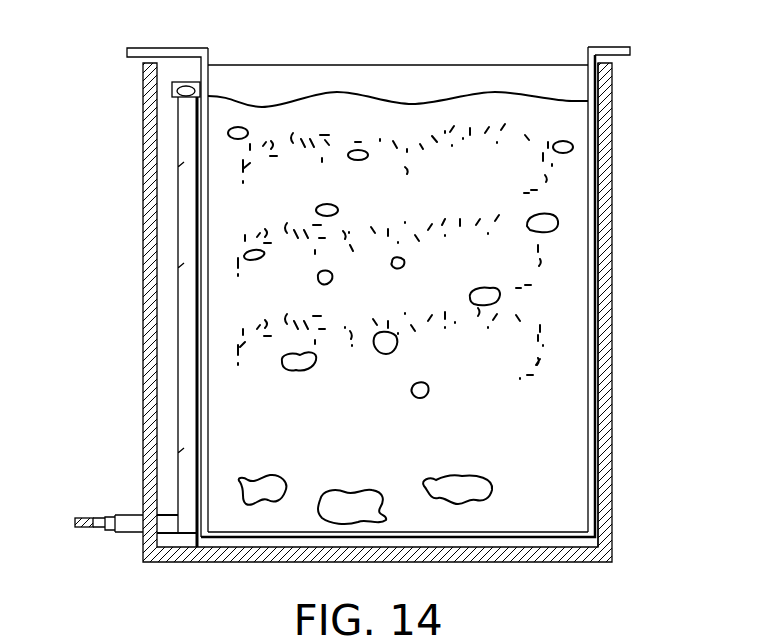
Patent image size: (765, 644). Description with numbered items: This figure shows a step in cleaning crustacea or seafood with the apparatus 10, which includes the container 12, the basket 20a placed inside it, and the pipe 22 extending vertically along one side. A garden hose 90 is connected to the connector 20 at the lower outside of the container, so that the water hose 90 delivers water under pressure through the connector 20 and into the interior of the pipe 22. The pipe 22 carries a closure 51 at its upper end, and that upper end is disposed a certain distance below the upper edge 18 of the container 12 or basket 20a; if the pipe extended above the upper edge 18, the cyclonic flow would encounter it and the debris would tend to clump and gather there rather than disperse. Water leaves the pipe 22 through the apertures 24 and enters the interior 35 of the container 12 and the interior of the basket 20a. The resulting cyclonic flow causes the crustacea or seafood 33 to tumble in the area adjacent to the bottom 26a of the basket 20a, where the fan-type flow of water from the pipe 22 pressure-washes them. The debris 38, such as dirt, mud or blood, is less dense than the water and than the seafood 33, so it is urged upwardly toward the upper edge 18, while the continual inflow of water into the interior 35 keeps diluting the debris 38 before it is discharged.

The apparatus 10 is at (652, 110).
The container 12 is at (612, 188).
The upper edge 18 is at (342, 64).
The connector 20 is at (128, 514).
The basket 20a is at (588, 372).
The pipe 22 is at (197, 294).
The apertures 24 is at (197, 222).
The bottom of the basket 26a is at (545, 532).
The crustacea or seafood 33 is at (278, 472).
The interior of the container 35 is at (612, 405).
The debris 38 is at (468, 133).
The closure 51 is at (190, 84).
The garden hose 90 is at (95, 518).